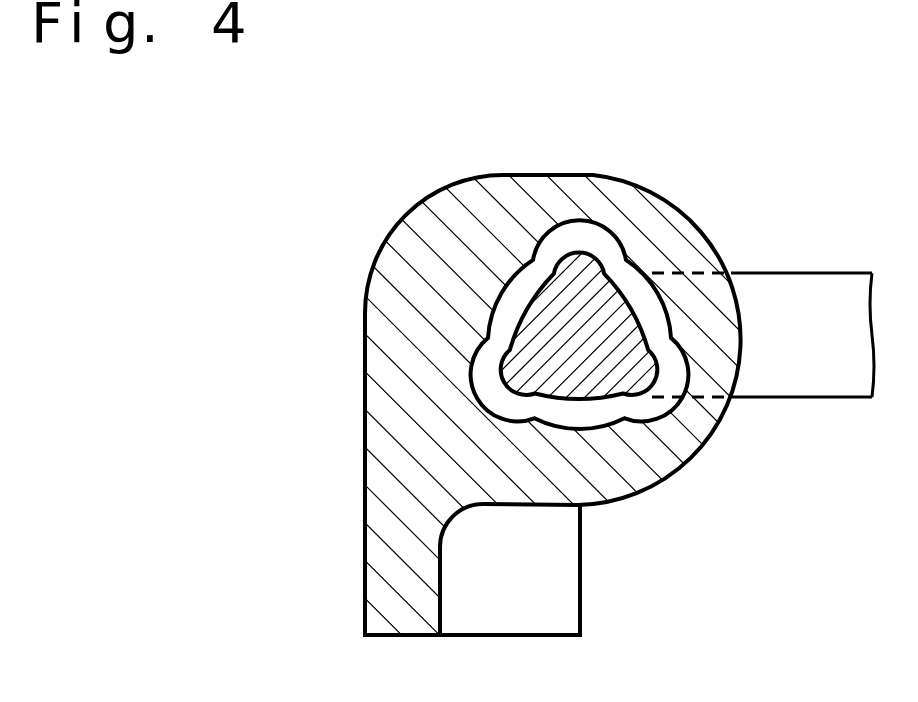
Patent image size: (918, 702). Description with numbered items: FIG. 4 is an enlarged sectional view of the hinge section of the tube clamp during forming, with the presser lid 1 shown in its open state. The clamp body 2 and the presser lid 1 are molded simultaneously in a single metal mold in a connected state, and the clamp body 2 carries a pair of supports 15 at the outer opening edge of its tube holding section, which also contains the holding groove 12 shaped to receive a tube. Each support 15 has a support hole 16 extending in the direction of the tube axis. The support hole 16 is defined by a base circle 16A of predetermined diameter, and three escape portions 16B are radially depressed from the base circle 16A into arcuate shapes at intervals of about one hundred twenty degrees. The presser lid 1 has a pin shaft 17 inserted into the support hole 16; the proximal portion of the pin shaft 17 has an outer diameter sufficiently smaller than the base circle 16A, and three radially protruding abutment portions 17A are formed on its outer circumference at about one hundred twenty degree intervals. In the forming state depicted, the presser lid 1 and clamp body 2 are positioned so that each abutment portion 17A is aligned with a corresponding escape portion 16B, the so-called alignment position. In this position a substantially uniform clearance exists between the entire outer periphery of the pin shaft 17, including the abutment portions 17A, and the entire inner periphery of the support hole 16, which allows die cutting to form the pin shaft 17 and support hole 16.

The presser lid 1 is at (800, 310).
The clamp body 2 is at (602, 588).
The holding groove 12 is at (268, 608).
The support 15 is at (640, 222).
The support hole 16 is at (300, 160).
The base circle 16A is at (483, 310).
The escape portion 16B is at (480, 367).
The pin shaft 17 is at (540, 313).
The abutment portion 17A is at (586, 275).